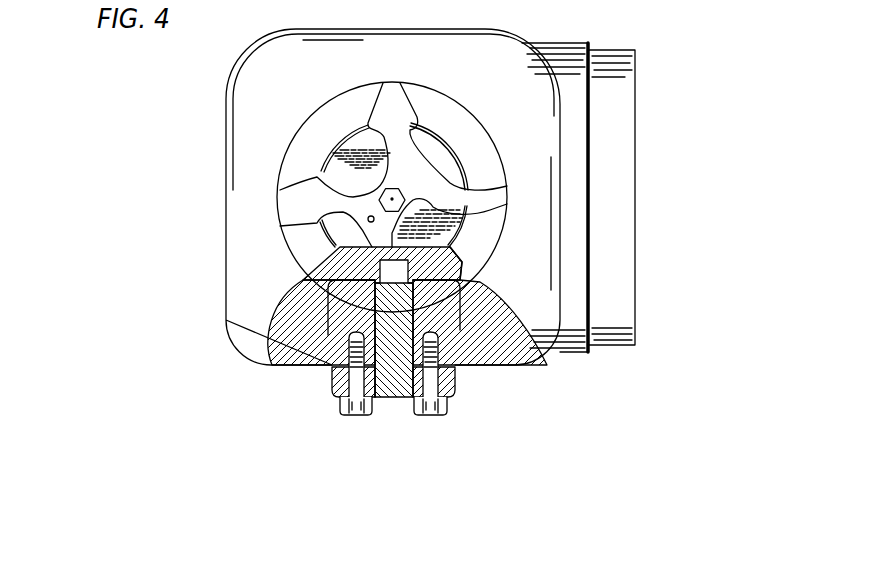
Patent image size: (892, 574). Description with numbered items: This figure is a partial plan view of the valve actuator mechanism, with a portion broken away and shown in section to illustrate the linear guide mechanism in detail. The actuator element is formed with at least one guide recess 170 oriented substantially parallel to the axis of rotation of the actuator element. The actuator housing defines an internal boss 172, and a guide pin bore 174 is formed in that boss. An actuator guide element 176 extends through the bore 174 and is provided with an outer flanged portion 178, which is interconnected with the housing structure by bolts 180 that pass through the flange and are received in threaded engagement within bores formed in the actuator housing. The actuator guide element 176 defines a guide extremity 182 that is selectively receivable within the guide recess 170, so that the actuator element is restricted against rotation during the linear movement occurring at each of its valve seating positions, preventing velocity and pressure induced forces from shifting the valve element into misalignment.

The guide recess 170 is at (373, 268).
The internal boss 172 is at (447, 300).
The guide pin bore 174 is at (373, 310).
The actuator guide element 176 is at (403, 323).
The outer flanged portion 178 is at (457, 393).
The bolts 180 is at (340, 403).
The guide extremity 182 is at (452, 263).